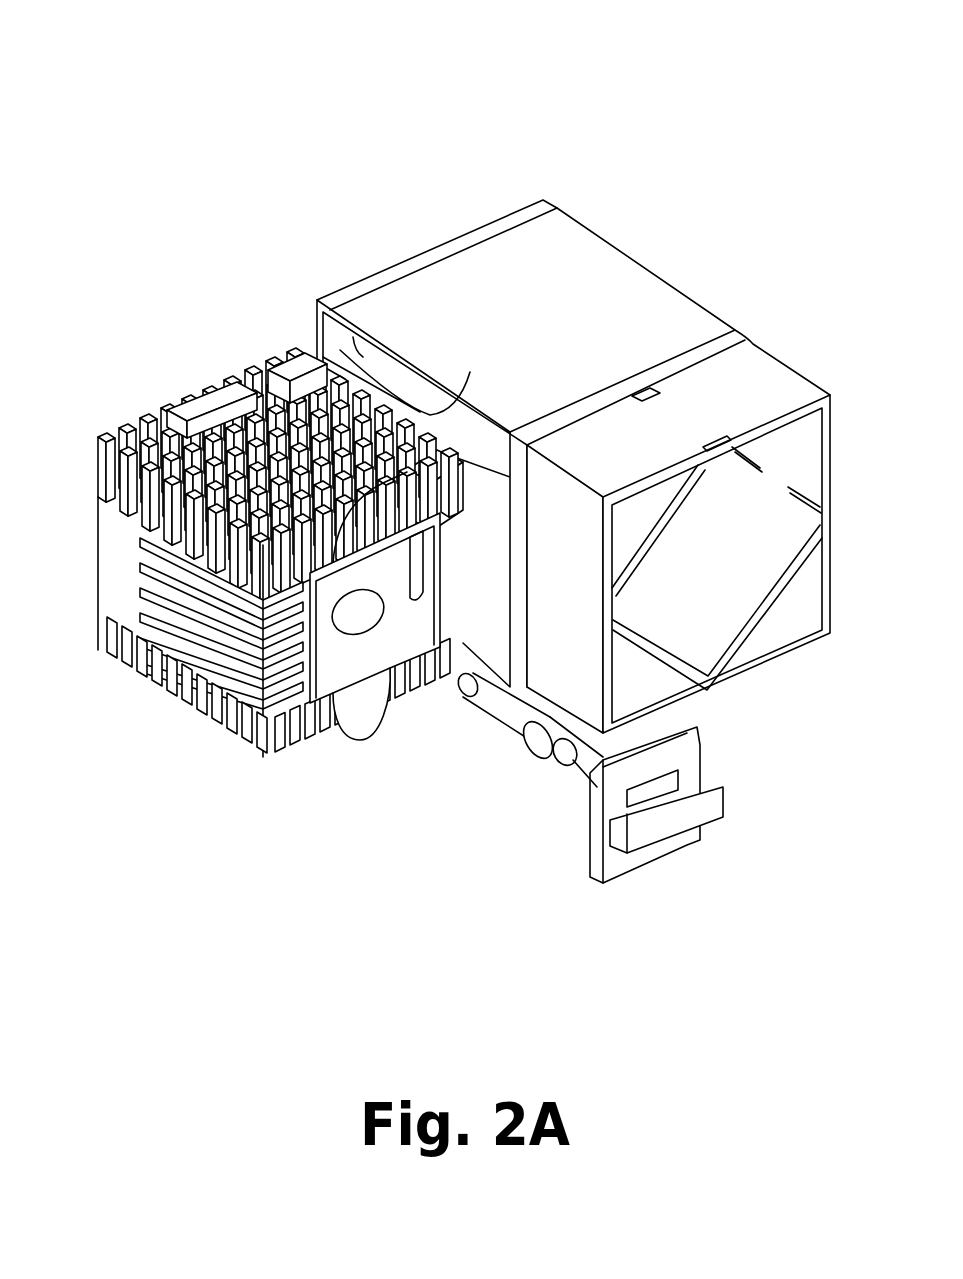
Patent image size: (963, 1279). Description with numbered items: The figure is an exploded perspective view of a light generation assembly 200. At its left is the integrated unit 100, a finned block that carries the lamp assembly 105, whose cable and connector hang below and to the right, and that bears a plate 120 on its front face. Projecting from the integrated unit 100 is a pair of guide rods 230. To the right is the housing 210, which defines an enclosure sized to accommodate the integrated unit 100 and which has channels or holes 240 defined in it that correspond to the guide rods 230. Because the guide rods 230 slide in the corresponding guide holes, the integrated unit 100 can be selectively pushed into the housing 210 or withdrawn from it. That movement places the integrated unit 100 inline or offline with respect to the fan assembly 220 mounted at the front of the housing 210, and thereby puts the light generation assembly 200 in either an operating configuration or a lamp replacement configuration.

The light generation assembly 200 is at (452, 462).
The integrated unit 100 is at (160, 340).
The guide rods 230 is at (483, 453).
The housing 210 is at (575, 305).
The channels or holes 240 is at (768, 334).
The fan assembly 220 is at (733, 592).
The mounting plate 120 is at (368, 712).
The lamp assembly 105 is at (495, 780).